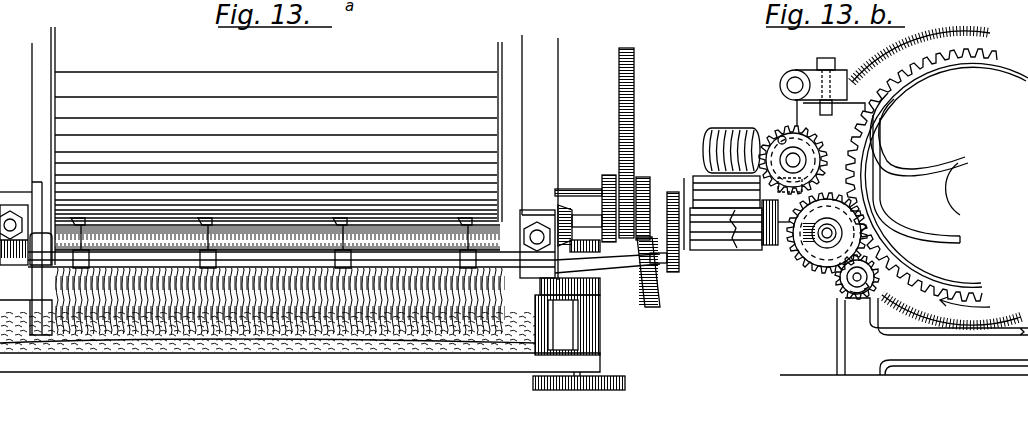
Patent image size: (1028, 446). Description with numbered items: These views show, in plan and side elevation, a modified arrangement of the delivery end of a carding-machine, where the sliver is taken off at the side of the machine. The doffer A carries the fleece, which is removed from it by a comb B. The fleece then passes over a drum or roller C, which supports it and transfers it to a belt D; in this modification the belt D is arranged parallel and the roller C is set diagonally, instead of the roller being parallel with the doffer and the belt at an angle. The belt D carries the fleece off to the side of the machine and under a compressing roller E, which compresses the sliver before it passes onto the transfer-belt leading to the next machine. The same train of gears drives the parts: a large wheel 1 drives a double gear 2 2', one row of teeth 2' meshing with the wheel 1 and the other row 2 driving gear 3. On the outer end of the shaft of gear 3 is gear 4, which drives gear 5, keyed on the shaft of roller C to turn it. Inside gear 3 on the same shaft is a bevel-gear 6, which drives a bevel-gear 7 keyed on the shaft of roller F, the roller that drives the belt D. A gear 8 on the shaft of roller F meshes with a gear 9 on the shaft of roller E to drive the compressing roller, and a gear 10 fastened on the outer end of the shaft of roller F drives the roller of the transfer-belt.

In FIG. 13A, the doffer A is at (276, 146).
In FIG. 13B, the doffer A is at (936, 172).
In FIG. 13A, the comb B is at (287, 223).
In FIG. 13A, the drum or roller C is at (280, 301).
In FIG. 13B, the drum or roller C is at (731, 141).
In FIG. 13A, the belt D is at (267, 332).
In FIG. 13B, the belt D is at (726, 229).
In FIG. 13A, the compressing roller E is at (567, 325).
In FIG. 13B, the compressing roller E is at (726, 192).
In FIG. 13B, the roller F is at (731, 224).
In FIG. 13A, the large wheel 1 is at (635, 108).
In FIG. 13B, the large wheel 1 is at (903, 87).
In FIG. 13A, the double gear 2 is at (607, 200).
In FIG. 13A, the double gear 2' is at (645, 199).
In FIG. 13B, the double gear 2' is at (857, 288).
In FIG. 13A, the gear 3 is at (592, 248).
In FIG. 13A, the gear 4 is at (664, 228).
In FIG. 13B, the gear 4 is at (827, 239).
In FIG. 13A, the gear 5 is at (664, 290).
In FIG. 13B, the gear 5 is at (793, 160).
In FIG. 13A, the bevel-gear 6 is at (569, 224).
In FIG. 13A, the bevel-gear 7 is at (584, 223).
In FIG. 13A, the gear 8 is at (600, 258).
In FIG. 13B, the gear 8 is at (781, 248).
In FIG. 13A, the gear 9 is at (554, 262).
In FIG. 13B, the gear 9 is at (790, 187).
In FIG. 13A, the gear 10 is at (627, 386).